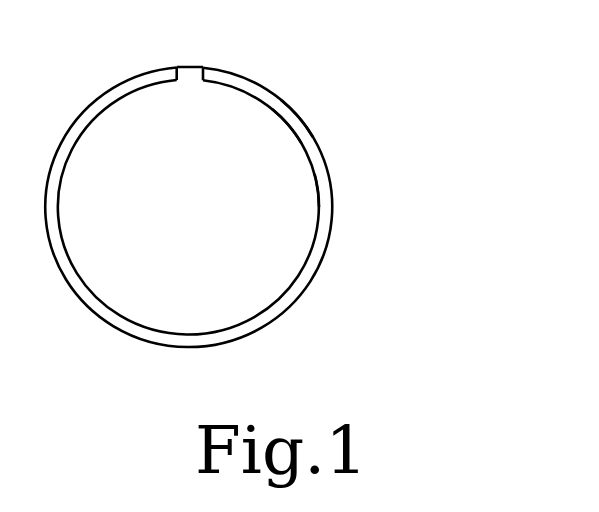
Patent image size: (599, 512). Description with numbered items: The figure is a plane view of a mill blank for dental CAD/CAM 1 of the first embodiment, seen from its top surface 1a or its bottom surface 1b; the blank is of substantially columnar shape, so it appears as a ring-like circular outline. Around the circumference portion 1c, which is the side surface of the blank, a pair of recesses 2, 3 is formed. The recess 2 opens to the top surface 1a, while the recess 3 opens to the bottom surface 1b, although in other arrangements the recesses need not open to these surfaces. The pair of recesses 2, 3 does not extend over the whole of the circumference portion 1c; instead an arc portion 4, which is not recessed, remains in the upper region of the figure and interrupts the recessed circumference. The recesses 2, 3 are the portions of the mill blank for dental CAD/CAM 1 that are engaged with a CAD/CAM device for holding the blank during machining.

The mill blank for dental CAD/CAM 1 is at (255, 186).
The top surface 1a is at (297, 189).
The bottom surface 1b is at (317, 190).
The circumference portion 1c is at (318, 142).
The recess 2 is at (293, 120).
The recess 3 is at (286, 126).
The arc portion 4 is at (192, 76).